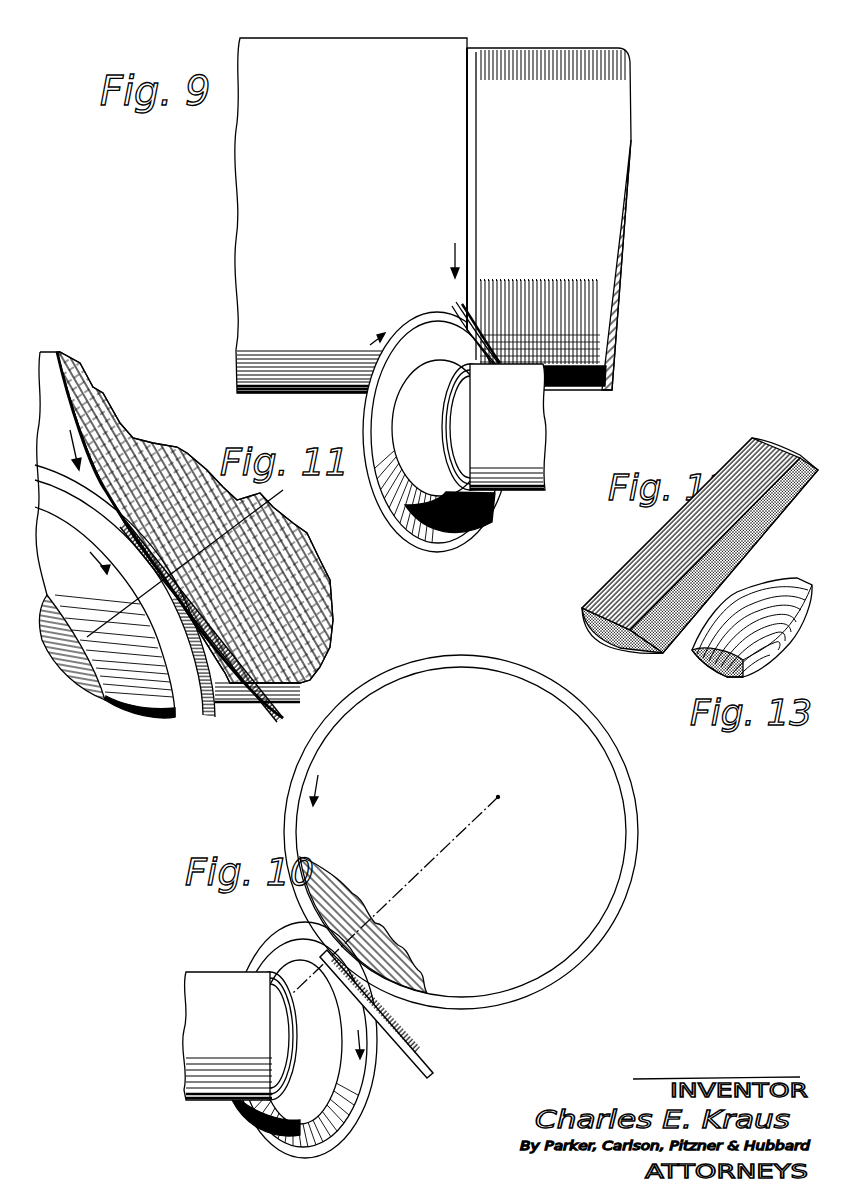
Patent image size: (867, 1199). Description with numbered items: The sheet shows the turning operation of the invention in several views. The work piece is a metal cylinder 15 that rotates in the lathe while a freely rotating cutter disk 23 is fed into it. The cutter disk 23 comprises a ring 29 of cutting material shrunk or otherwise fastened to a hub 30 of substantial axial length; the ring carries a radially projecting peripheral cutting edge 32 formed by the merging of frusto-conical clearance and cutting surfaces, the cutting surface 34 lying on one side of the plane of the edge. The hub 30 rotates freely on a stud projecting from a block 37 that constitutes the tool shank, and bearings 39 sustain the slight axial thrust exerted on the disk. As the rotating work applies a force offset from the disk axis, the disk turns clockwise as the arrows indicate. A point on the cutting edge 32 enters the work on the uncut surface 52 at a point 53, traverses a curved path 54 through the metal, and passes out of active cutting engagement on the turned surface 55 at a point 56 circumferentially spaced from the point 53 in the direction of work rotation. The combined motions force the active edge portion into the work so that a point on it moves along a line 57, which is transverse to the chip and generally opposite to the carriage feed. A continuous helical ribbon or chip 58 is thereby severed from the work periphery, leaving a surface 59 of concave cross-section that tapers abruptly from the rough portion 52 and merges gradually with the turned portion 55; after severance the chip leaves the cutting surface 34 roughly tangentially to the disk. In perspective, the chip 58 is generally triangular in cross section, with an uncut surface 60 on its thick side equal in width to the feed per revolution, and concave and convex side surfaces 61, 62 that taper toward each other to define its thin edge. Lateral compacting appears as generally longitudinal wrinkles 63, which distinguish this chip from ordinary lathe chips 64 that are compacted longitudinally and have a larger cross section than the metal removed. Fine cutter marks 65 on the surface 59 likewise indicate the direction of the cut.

In FIG. 9, the metal cylinder 15 is at (431, 47).
In FIG. 11, the metal cylinder 15 is at (312, 595).
In FIG. 10, the metal cylinder 15 is at (612, 913).
In FIG. 9, the cutter disk 23 is at (360, 425).
In FIG. 11, the cutter disk 23 is at (156, 713).
In FIG. 10, the cutter disk 23 is at (349, 1123).
In FIG. 9, the ring of cutting material 29 is at (455, 535).
In FIG. 9, the hub 30 is at (490, 507).
In FIG. 11, the hub 30 is at (130, 695).
In FIG. 10, the hub 30 is at (260, 960).
In FIG. 9, the peripheral cutting edge 32 is at (367, 447).
In FIG. 11, the peripheral cutting edge 32 is at (50, 463).
In FIG. 10, the peripheral cutting edge 32 is at (366, 1088).
In FIG. 9, the cutting surface 34 is at (370, 458).
In FIG. 11, the cutting surface 34 is at (201, 718).
In FIG. 10, the cutting surface 34 is at (361, 1098).
In FIG. 9, the block 37 is at (545, 425).
In FIG. 11, the block 37 is at (84, 683).
In FIG. 10, the block 37 is at (202, 978).
In FIG. 9, the bearings 39 is at (452, 430).
In FIG. 10, the bearings 39 is at (288, 1024).
In FIG. 9, the uncut surface 52 is at (353, 38).
In FIG. 11, the uncut surface 52 is at (55, 352).
In FIG. 10, the uncut surface 52 is at (645, 856).
In FIG. 9, the point of entry 53 is at (462, 308).
In FIG. 11, the point of entry 53 is at (95, 500).
In FIG. 11, the curved path 54 is at (125, 538).
In FIG. 9, the turned surface 55 is at (558, 48).
In FIG. 10, the turned surface 55 is at (632, 874).
In FIG. 11, the point of exit 56 is at (160, 583).
In FIG. 11, the line of resultant cutting direction 57 is at (104, 483).
In FIG. 9, the chip 58 is at (486, 350).
In FIG. 11, the chip 58 is at (275, 722).
In FIG. 12, the chip 58 is at (763, 440).
In FIG. 10, the chip 58 is at (420, 1043).
In FIG. 9, the work surface of concave cross-section 59 is at (470, 48).
In FIG. 11, the work surface of concave cross-section 59 is at (310, 670).
In FIG. 10, the work surface of concave cross-section 59 is at (624, 890).
In FIG. 11, the uncut surface of chip 60 is at (255, 705).
In FIG. 12, the uncut surface of chip 60 is at (766, 528).
In FIG. 10, the uncut surface of chip 60 is at (431, 1073).
In FIG. 12, the concave side surface 61 is at (590, 622).
In FIG. 10, the concave side surface 61 is at (405, 1026).
In FIG. 12, the convex side surface 62 is at (610, 642).
In FIG. 12, the wrinkles 63 is at (724, 466).
In FIG. 13, the ordinary lathe chips 64 is at (782, 648).
In FIG. 9, the cutter marks 65 is at (479, 276).
In FIG. 11, the cutter marks 65 is at (100, 458).